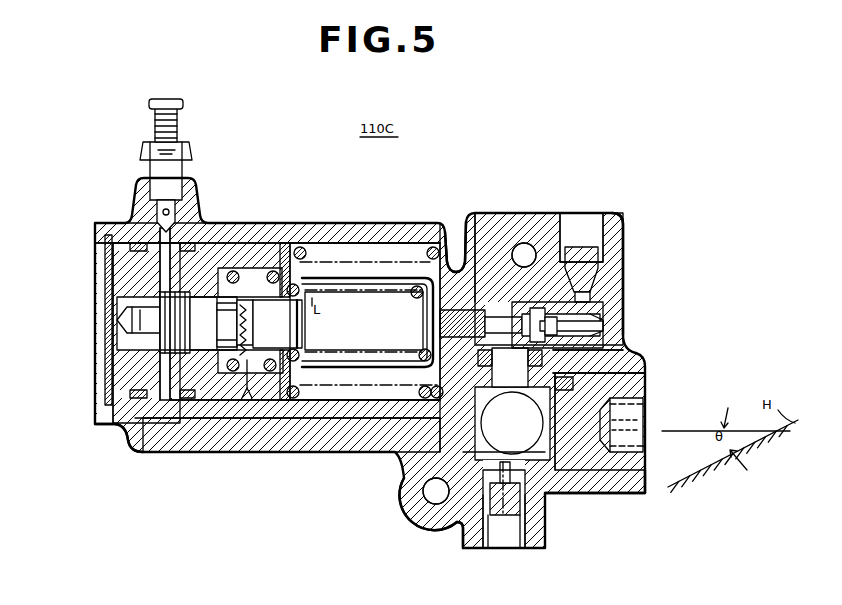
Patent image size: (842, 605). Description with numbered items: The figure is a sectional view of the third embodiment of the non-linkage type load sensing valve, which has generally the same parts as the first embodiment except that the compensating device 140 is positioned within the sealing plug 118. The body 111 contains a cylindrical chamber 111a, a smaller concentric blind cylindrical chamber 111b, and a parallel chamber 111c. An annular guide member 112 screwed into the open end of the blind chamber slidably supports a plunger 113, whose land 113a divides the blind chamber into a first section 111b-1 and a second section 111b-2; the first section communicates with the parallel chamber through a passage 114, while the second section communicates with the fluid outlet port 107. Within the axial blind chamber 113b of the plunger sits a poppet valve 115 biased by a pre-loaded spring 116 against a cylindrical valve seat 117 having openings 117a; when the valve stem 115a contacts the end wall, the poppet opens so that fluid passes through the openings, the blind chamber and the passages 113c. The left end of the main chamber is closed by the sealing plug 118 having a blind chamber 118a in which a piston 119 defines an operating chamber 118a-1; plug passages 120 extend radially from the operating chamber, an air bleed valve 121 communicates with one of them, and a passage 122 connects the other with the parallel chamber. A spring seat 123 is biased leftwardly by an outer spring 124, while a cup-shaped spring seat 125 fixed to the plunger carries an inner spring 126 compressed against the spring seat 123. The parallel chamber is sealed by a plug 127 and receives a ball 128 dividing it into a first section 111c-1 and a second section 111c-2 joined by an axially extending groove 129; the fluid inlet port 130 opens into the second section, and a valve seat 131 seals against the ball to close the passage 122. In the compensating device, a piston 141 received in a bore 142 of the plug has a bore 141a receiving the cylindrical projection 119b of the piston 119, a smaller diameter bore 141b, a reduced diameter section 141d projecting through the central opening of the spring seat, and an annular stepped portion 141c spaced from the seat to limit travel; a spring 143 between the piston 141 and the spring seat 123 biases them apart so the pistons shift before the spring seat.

The fluid outlet port 107 is at (598, 230).
The body 111 is at (306, 237).
The cylindrical chamber 111a is at (345, 262).
The blind cylindrical chamber 111b is at (625, 360).
The first section of blind chamber 111b-1 is at (622, 378).
The second section of blind chamber 111b-2 is at (598, 318).
The cylindrical chamber 111c is at (530, 545).
The first section of chamber 111c-1 is at (563, 472).
The second section of chamber 111c-2 is at (462, 530).
The annular guide member 112 is at (448, 230).
The plunger 113 is at (482, 275).
The land 113a is at (562, 250).
The axial blind chamber 113b is at (580, 240).
The passages 113c is at (505, 366).
The passage 114 is at (593, 494).
The poppet valve 115 is at (600, 310).
The valve stem 115a is at (604, 335).
The pre-loaded spring 116 is at (479, 310).
The cylindrical valve seat 117 is at (603, 338).
The openings 117a is at (603, 326).
The sealing plug 118 is at (130, 378).
The blind chamber 118a is at (224, 243).
The operating chamber 118a-1 is at (148, 326).
The piston 119 is at (115, 270).
The cylindrical projection 119b is at (162, 420).
The housing flange 120 is at (130, 430).
The air bleed valve 121 is at (172, 186).
The passage 122 is at (348, 428).
The spring seat 123 is at (250, 300).
The outer spring 124 is at (386, 278).
The spring seat 125 is at (386, 286).
The inner spring 126 is at (330, 298).
The plug 127 is at (636, 392).
The ball 128 is at (518, 448).
The axially extending groove 129 is at (527, 548).
The fluid inlet port 130 is at (503, 540).
The valve seat 131 is at (420, 482).
The compensating device 140 is at (250, 400).
The piston 141 is at (214, 400).
The bore 141a is at (244, 398).
The smaller diameter bore 141b is at (302, 400).
The annular stepped portion 141c is at (255, 268).
The reduced diameter section 141d is at (300, 314).
The bore 142 is at (224, 292).
The spring 143 is at (268, 398).